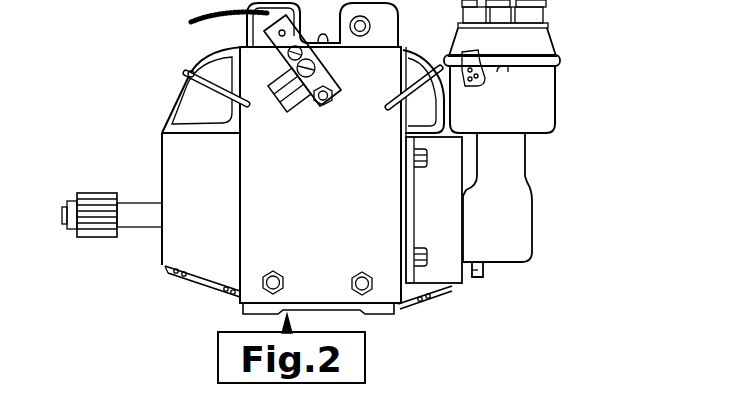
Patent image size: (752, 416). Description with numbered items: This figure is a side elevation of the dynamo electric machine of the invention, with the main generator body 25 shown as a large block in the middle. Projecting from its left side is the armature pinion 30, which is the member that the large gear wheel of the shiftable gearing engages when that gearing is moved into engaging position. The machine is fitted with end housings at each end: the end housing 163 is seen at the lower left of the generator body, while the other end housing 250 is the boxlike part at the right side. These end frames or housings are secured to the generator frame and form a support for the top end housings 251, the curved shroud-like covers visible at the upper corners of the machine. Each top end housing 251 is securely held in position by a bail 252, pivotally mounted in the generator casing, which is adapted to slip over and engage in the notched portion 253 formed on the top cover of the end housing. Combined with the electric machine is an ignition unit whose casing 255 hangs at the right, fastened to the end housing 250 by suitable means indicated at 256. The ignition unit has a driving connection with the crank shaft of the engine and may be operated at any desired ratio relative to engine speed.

The compressor housing 25 is at (323, 158).
The armature pinion 30 is at (100, 210).
The end housing 163 is at (188, 237).
The end housing 250 is at (438, 237).
The top end housing 251 is at (202, 112).
The bail 252 is at (187, 74).
The notched portion 253 is at (193, 74).
The casing 255 is at (512, 210).
The fastening means 256 is at (481, 279).